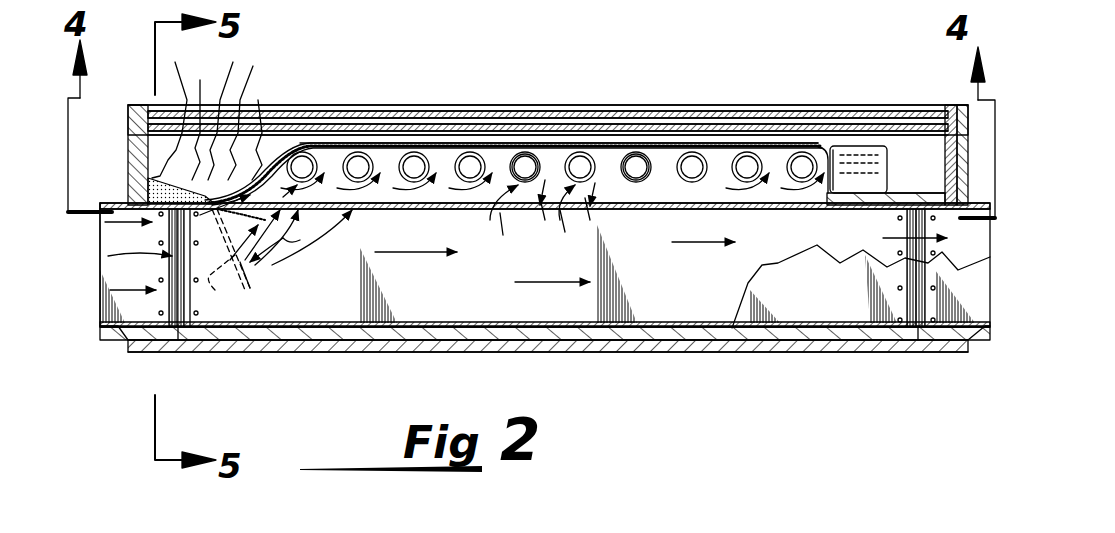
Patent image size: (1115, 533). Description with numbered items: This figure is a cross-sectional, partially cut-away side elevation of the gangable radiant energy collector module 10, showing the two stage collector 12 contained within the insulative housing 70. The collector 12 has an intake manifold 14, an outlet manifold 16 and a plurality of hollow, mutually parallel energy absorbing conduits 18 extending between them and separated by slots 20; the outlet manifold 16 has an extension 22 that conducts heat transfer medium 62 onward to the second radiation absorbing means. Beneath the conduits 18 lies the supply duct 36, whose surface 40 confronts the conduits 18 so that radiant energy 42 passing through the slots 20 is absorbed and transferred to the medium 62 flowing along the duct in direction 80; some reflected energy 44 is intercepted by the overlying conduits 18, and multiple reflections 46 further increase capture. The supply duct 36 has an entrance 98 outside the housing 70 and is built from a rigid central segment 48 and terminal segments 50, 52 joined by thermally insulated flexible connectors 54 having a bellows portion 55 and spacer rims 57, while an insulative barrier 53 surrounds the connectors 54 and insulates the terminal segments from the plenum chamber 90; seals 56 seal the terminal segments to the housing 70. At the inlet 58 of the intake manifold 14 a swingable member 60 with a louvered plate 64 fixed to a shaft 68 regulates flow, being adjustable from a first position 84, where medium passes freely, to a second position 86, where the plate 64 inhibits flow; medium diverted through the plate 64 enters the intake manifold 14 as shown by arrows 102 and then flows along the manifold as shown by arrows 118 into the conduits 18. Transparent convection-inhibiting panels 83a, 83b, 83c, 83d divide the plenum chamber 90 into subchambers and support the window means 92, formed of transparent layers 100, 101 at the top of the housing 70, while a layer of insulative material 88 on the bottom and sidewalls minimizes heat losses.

The gangable radiant energy collector module 10 is at (588, 58).
The two stage collector 12 is at (722, 150).
The intake manifold 14 is at (341, 143).
The outlet manifold 16 is at (820, 147).
The energy absorbing conduits 18 is at (533, 150).
The slots 20 is at (707, 140).
The extension 22 is at (885, 170).
The supply duct 36 is at (392, 330).
The surface 40 is at (645, 200).
The radiant energy 42 is at (547, 200).
The reflected energy 44 is at (540, 222).
The multiple reflections 46 is at (490, 220).
The central segment 48 is at (830, 313).
The terminal segment 50 is at (100, 278).
The terminal segment 52 is at (987, 340).
The insulative barrier 53 is at (942, 190).
The flexible connectors 54 is at (160, 352).
The bellows portion 55 is at (183, 345).
The seals 56 is at (128, 195).
The spacer rims 57 is at (165, 222).
The inlet 58 is at (254, 128).
The swingable member 60 is at (245, 258).
The heat transfer medium 62 is at (340, 315).
The plate 64 is at (235, 215).
The shaft 68 is at (222, 197).
The insulative housing 70 is at (128, 136).
The flow direction 80 is at (515, 275).
The convection-inhibiting panel 83a is at (175, 110).
The convection-inhibiting panel 83b is at (211, 119).
The convection-inhibiting panel 83c is at (237, 111).
The convection-inhibiting panel 83d is at (266, 119).
The first position 84 is at (214, 282).
The second position 86 is at (285, 245).
The layer of insulative material 88 is at (804, 340).
The plenum chamber 90 is at (903, 136).
The window means 92 is at (477, 128).
The entrance 98 is at (100, 241).
The layer of transparent plastic or glass 100 is at (436, 111).
The layer of transparent plastic or glass 101 is at (414, 128).
The arrows 102 is at (287, 205).
The arrows 118 is at (353, 183).